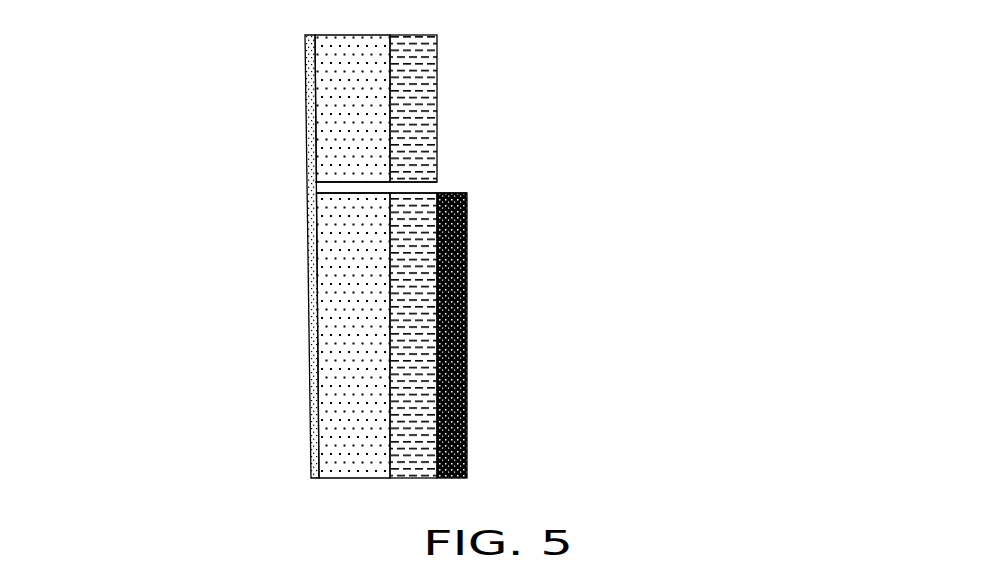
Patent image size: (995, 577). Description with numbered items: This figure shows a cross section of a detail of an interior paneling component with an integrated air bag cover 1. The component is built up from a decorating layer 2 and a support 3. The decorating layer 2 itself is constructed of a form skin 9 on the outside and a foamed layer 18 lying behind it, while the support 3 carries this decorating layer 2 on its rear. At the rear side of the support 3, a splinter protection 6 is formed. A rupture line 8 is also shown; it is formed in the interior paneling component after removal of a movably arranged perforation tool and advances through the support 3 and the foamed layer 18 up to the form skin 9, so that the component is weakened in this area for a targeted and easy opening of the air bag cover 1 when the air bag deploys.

The air bag cover 1 is at (354, 262).
The decorating layer 2 is at (347, 341).
The support 3 is at (415, 125).
The splinter protection 6 is at (468, 348).
The rupture line 8 is at (460, 185).
The form skin 9 is at (313, 110).
The foamed layer 18 is at (353, 255).